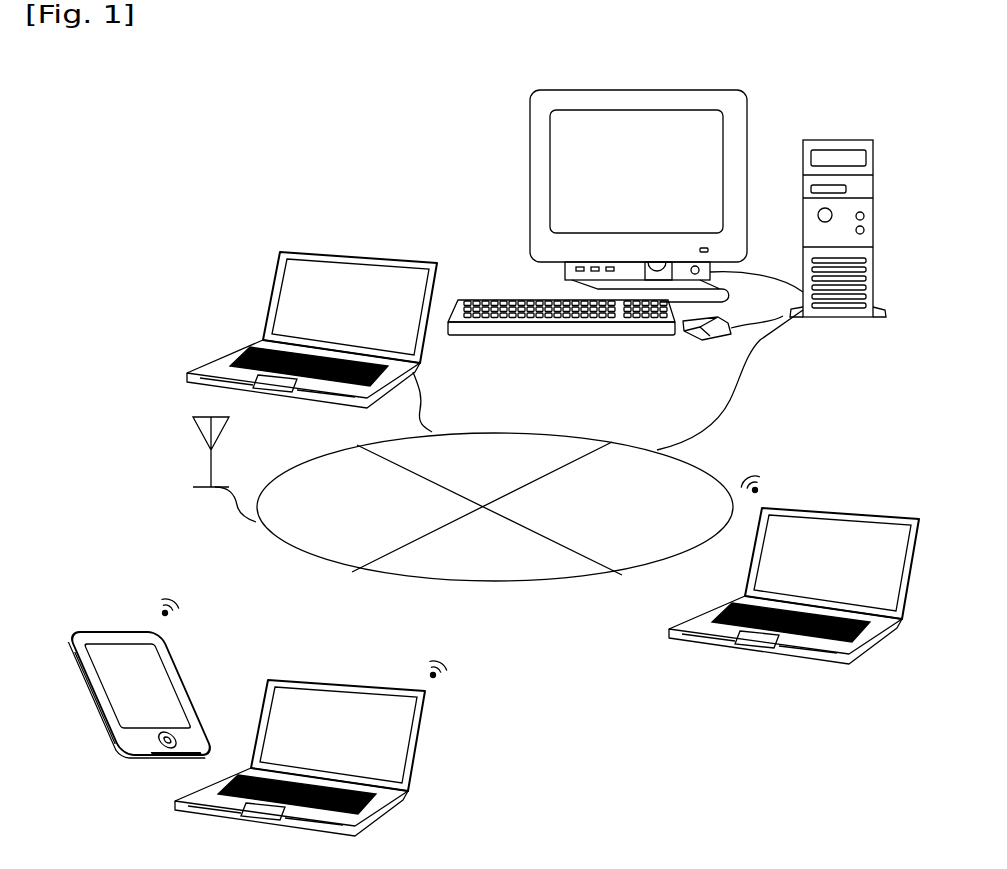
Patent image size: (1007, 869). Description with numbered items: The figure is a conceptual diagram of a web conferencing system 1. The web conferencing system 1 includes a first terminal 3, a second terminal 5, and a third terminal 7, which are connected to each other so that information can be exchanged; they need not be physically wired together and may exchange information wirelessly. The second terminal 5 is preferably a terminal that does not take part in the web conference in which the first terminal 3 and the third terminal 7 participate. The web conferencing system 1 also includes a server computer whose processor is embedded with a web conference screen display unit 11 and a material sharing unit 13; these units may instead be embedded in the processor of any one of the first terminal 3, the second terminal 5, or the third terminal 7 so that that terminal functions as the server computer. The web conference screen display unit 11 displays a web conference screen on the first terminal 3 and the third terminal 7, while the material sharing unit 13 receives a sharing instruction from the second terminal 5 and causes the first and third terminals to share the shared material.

The web conferencing system 1 is at (442, 113).
The first terminal 3 is at (366, 690).
The second terminal 5 is at (156, 665).
The third terminal 7 is at (823, 508).
The web conference screen display unit 11 is at (848, 197).
The material sharing unit 13 is at (818, 140).